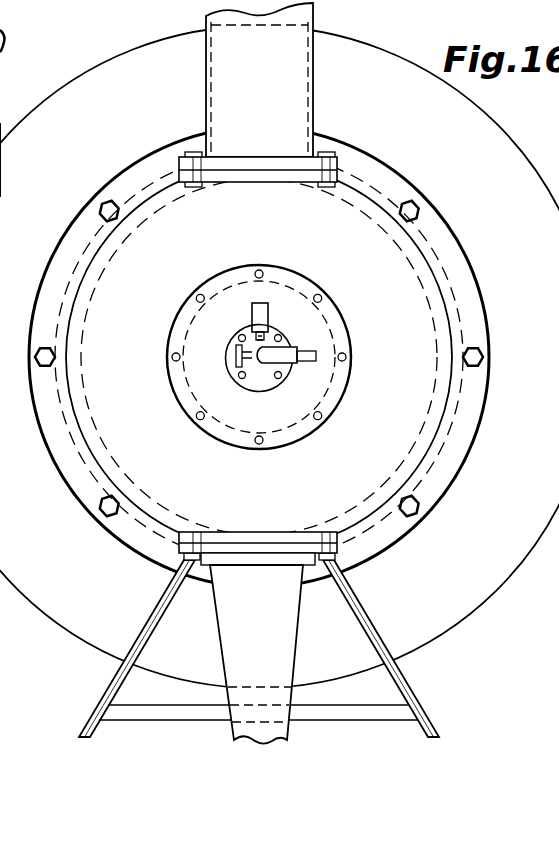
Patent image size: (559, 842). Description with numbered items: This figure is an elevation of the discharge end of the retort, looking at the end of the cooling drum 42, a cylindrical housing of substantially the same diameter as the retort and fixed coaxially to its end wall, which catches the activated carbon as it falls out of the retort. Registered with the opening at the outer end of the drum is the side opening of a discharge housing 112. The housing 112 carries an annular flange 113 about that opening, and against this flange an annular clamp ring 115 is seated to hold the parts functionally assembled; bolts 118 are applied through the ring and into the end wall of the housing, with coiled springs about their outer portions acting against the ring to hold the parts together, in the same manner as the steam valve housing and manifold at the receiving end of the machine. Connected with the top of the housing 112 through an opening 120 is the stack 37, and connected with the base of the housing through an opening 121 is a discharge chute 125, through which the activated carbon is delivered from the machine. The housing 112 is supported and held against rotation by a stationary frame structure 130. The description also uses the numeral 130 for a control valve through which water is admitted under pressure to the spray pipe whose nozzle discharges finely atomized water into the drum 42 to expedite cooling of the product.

The stack 37 is at (305, 47).
The cooling drum 42 is at (72, 637).
The discharge housing 112 is at (380, 263).
The annular flange 113 is at (457, 303).
The annular clamp ring 115 is at (387, 182).
The bolts 118 is at (420, 211).
The opening 120 is at (235, 160).
The opening 121 is at (215, 535).
The discharge chute 125 is at (280, 645).
The stationary frame structure 130 is at (240, 367).